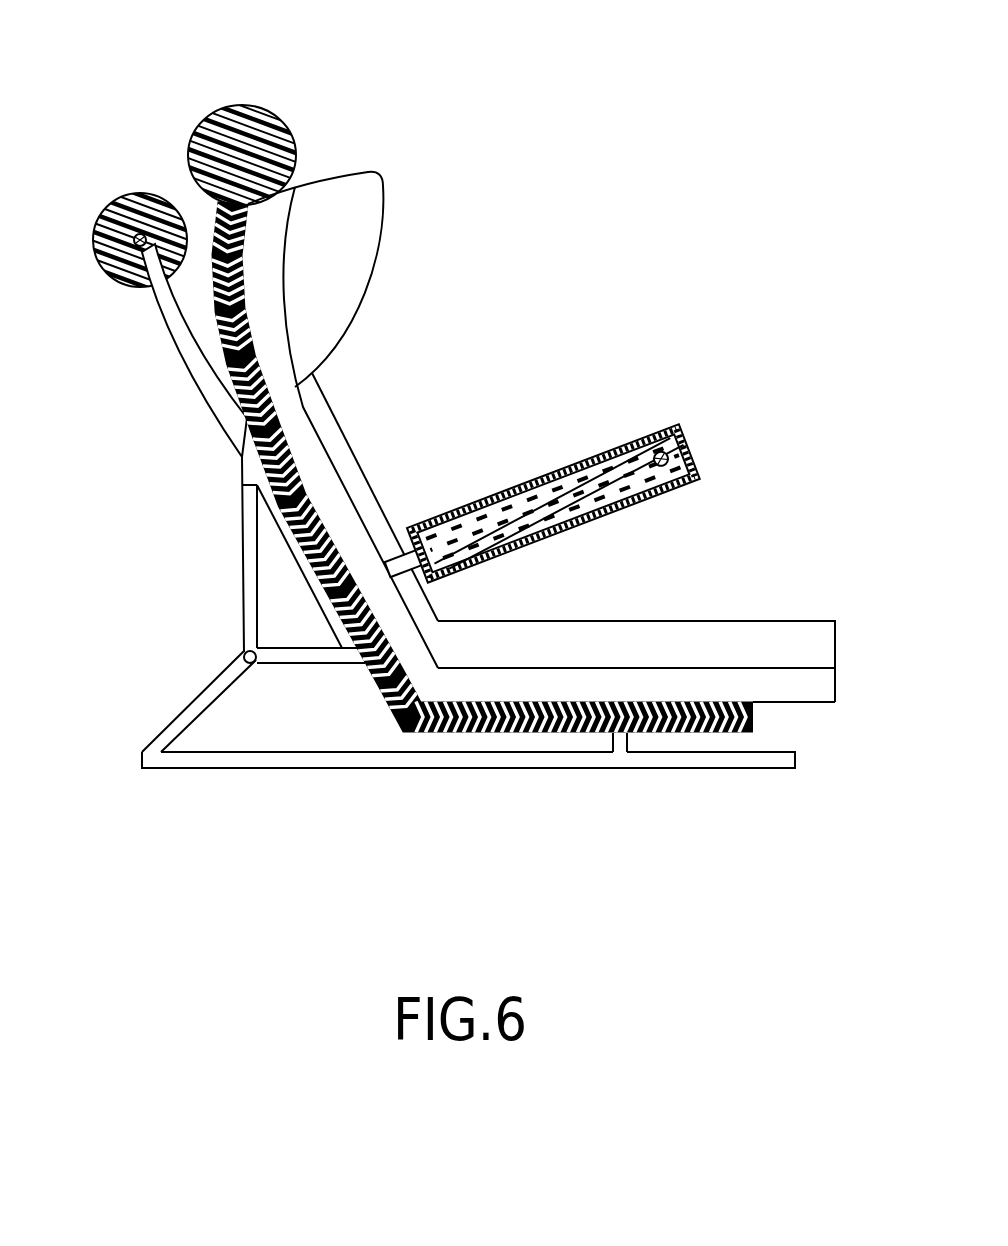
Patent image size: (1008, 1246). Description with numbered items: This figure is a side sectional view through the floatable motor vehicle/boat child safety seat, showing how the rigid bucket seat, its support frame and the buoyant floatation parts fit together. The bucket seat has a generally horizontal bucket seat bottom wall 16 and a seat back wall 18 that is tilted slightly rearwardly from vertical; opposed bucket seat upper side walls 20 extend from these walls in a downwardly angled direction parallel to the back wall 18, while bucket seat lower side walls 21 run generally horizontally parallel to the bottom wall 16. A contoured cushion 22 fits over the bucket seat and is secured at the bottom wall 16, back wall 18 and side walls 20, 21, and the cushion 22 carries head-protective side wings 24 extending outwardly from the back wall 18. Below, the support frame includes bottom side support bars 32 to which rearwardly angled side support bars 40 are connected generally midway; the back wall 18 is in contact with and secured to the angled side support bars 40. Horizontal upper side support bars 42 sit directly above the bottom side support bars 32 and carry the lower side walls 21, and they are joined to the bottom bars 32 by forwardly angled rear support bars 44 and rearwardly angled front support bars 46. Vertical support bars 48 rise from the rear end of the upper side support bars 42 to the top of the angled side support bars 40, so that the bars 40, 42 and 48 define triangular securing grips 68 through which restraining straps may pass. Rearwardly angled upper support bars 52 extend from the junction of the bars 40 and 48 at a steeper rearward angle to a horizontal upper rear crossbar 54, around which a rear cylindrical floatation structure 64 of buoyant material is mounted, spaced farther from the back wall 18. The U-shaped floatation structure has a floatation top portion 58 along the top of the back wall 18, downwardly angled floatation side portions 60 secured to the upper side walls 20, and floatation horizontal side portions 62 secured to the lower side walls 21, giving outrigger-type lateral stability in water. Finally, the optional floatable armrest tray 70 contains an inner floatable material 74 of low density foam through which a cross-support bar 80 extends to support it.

The bucket seat bottom wall 16 is at (757, 720).
The seat back wall 18 is at (270, 483).
The bucket seat upper side walls 20 is at (328, 460).
The bucket seat lower side walls 21 is at (492, 683).
The cushion 22 is at (232, 407).
The head-protective side wings 24 is at (357, 248).
The bottom side support bars 32 is at (438, 760).
The rearwardly angled side support bars 40 is at (300, 550).
The upper side support bars 42 is at (293, 663).
The forwardly angled rear support bars 44 is at (218, 688).
The rearwardly angled front support bars 46 is at (623, 742).
The vertical support bars 48 is at (247, 586).
The rearwardly angled upper support bars 52 is at (182, 327).
The horizontal upper rear crossbar 54 is at (140, 240).
The floatation top portion 58 is at (247, 128).
The downwardly angled floatation side portions 60 is at (330, 398).
The floatation horizontal side portions 62 is at (748, 628).
The rear cylindrical floatation structure 64 is at (113, 251).
The triangular securing grips 68 is at (306, 626).
The floatable armrest tray 70 is at (521, 463).
The inner floatable material 74 is at (533, 484).
The cross-support bar 80 is at (680, 428).